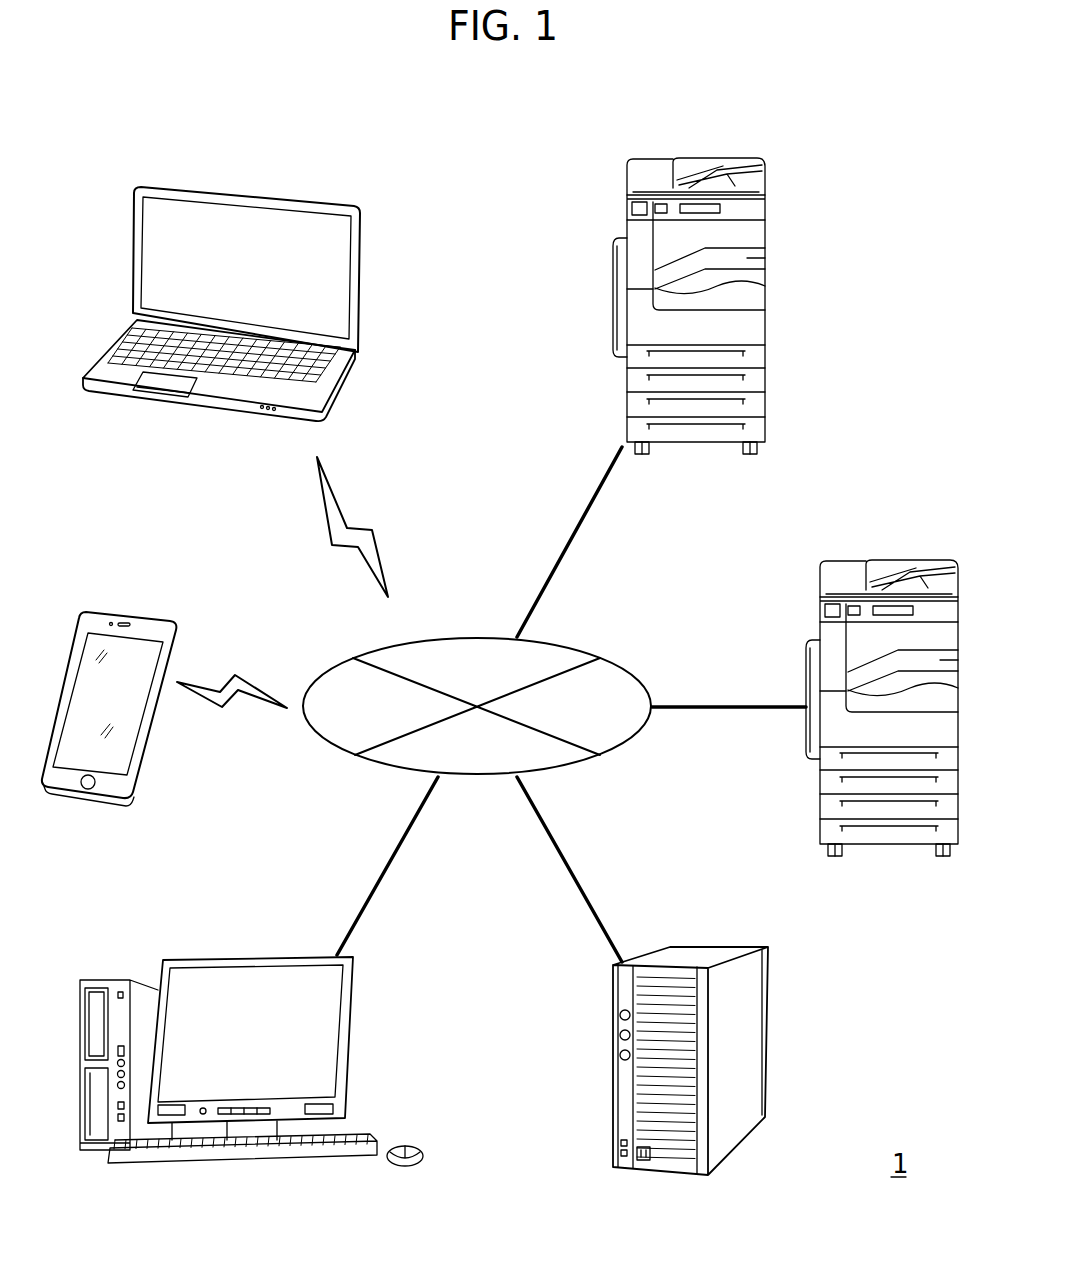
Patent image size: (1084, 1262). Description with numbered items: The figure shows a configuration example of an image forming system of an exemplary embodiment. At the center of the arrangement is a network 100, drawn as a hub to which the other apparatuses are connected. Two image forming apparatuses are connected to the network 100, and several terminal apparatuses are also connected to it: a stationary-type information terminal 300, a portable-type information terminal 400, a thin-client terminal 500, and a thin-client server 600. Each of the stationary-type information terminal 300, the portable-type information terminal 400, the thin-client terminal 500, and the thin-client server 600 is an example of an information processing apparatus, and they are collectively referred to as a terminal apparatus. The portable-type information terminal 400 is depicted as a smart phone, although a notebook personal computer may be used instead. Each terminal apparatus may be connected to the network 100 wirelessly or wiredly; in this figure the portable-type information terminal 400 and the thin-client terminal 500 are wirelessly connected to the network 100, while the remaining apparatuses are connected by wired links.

The network 100 is at (575, 646).
The stationary-type information terminal 300 is at (255, 957).
The portable-type information terminal 400 is at (118, 612).
The thin-client terminal 500 is at (256, 189).
The thin-client server 600 is at (717, 946).